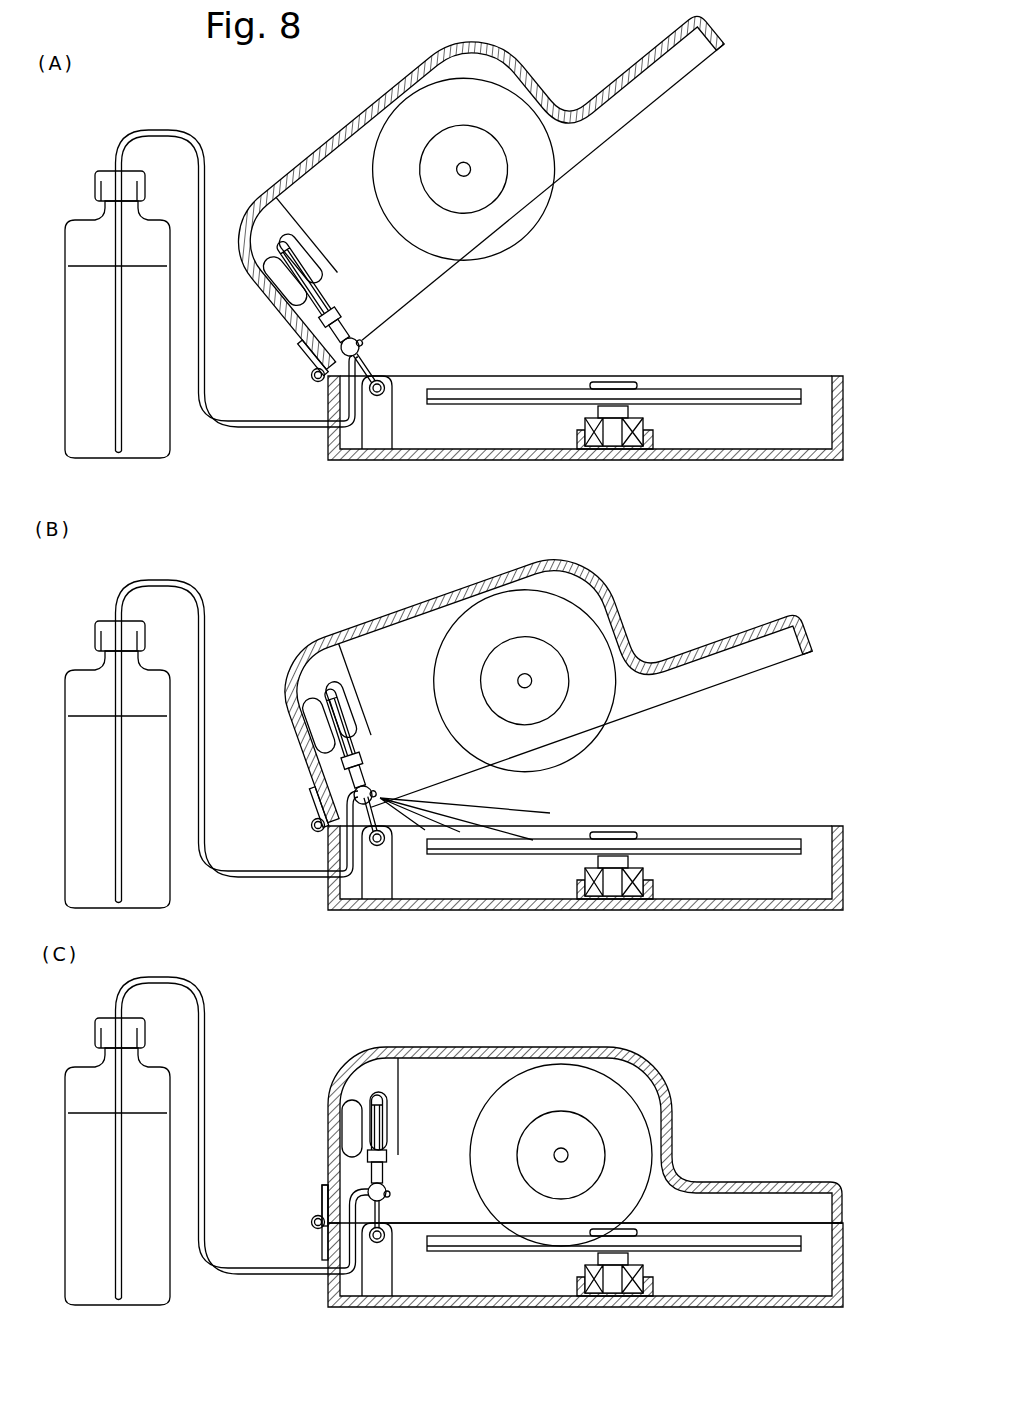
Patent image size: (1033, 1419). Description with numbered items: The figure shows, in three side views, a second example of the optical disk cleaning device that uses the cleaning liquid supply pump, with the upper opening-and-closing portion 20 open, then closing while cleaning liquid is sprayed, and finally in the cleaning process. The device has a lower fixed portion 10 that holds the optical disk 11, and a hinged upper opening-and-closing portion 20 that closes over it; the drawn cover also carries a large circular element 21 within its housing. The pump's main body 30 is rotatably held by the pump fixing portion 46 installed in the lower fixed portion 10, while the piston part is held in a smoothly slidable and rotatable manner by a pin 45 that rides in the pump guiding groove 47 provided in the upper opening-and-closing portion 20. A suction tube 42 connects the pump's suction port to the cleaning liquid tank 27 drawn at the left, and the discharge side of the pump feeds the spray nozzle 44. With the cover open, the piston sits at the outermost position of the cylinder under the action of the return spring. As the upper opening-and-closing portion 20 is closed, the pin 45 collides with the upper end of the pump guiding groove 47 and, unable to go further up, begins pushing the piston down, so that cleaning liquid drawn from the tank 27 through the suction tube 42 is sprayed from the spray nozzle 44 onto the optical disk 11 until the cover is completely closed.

The lower fixed portion 10 is at (838, 1265).
The optical disk 11 is at (750, 1238).
The upper opening-and-closing portion 20 is at (833, 1187).
The rotary disc 21 is at (612, 1110).
The cleaning liquid tank 27 is at (160, 1273).
The main body 30 is at (379, 1168).
The suction tube 42 is at (201, 1082).
The spray nozzle 44 is at (381, 1189).
The pin 45 is at (380, 1093).
The pump fixing portion 46 is at (386, 1228).
The pump guiding groove 47 is at (362, 1110).